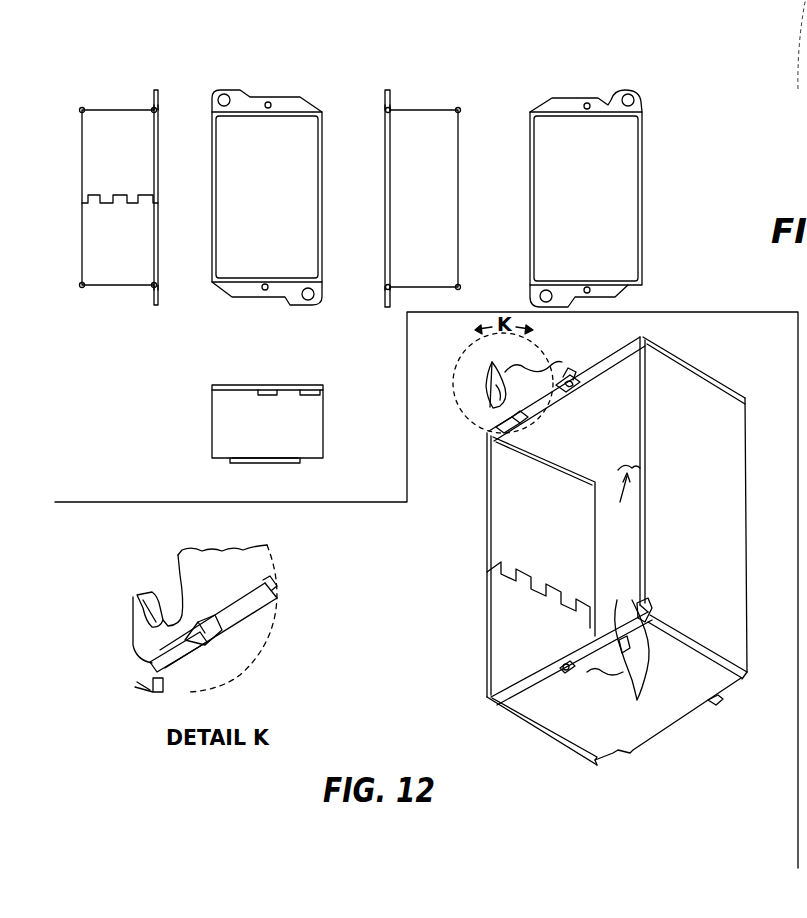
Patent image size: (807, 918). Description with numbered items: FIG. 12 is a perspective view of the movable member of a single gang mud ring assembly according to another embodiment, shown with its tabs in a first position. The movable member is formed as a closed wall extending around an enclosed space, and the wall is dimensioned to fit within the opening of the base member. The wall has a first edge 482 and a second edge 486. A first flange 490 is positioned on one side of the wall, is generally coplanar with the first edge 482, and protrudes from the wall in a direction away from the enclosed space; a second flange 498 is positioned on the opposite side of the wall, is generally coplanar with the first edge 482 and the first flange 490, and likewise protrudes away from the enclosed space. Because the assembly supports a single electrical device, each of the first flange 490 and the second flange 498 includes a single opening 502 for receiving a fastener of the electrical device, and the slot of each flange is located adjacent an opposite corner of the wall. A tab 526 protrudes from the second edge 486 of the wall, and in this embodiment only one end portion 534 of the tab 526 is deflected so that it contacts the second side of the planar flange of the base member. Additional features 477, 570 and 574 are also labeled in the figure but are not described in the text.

The housing 477 is at (718, 548).
The first edge 482 is at (160, 182).
The second edge 486 is at (82, 226).
The first flange 490 is at (158, 296).
The second flange 498 is at (160, 100).
The opening 502 is at (572, 385).
The tab 526 is at (272, 463).
The end portion 534 is at (715, 712).
The clip 570 is at (512, 374).
The slot 574 is at (494, 424).